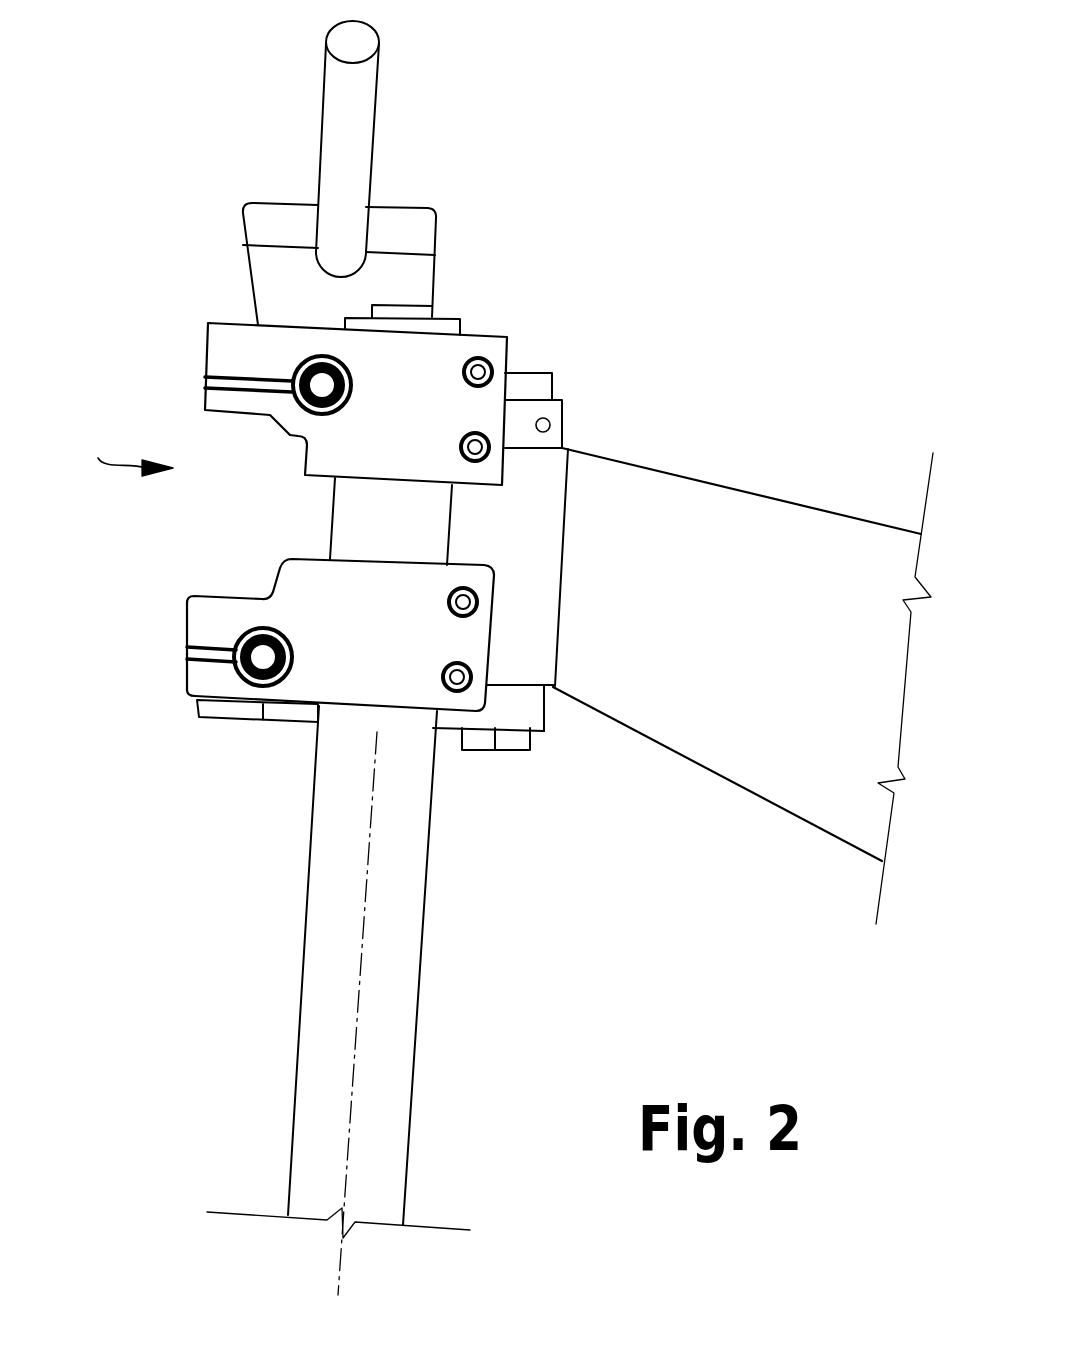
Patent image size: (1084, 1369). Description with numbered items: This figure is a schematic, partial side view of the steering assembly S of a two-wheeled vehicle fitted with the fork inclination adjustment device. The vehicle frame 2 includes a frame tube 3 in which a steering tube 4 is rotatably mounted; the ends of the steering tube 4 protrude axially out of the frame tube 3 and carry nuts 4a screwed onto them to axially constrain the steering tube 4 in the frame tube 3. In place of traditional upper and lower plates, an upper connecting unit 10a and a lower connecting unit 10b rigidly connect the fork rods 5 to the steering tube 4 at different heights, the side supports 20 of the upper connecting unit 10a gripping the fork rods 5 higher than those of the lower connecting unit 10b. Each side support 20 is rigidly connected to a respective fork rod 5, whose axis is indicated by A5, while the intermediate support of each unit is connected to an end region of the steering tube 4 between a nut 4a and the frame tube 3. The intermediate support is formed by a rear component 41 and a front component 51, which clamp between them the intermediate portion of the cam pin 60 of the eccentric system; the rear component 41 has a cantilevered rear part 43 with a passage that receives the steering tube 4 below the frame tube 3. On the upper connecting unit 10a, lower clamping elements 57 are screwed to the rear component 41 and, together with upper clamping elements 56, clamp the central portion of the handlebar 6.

The frame 2 is at (779, 485).
The frame tube 3 is at (550, 585).
The steering tube 4 is at (562, 583).
The nut 4a is at (538, 380).
The fork rod 5 is at (407, 957).
The axis of rod 5 A5 is at (355, 1100).
The handlebar 6 is at (392, 113).
The upper connecting unit 10a is at (153, 345).
The lower connecting unit 10b is at (159, 707).
The side support 20 is at (220, 308).
The rear component 41 is at (580, 400).
The cantilevered rear part 43 is at (552, 438).
The front component 51 is at (212, 732).
The upper clamping element 56 is at (415, 218).
The lower clamping element 57 is at (420, 265).
The cam pin 60 is at (322, 385).
The steering assembly S is at (122, 453).